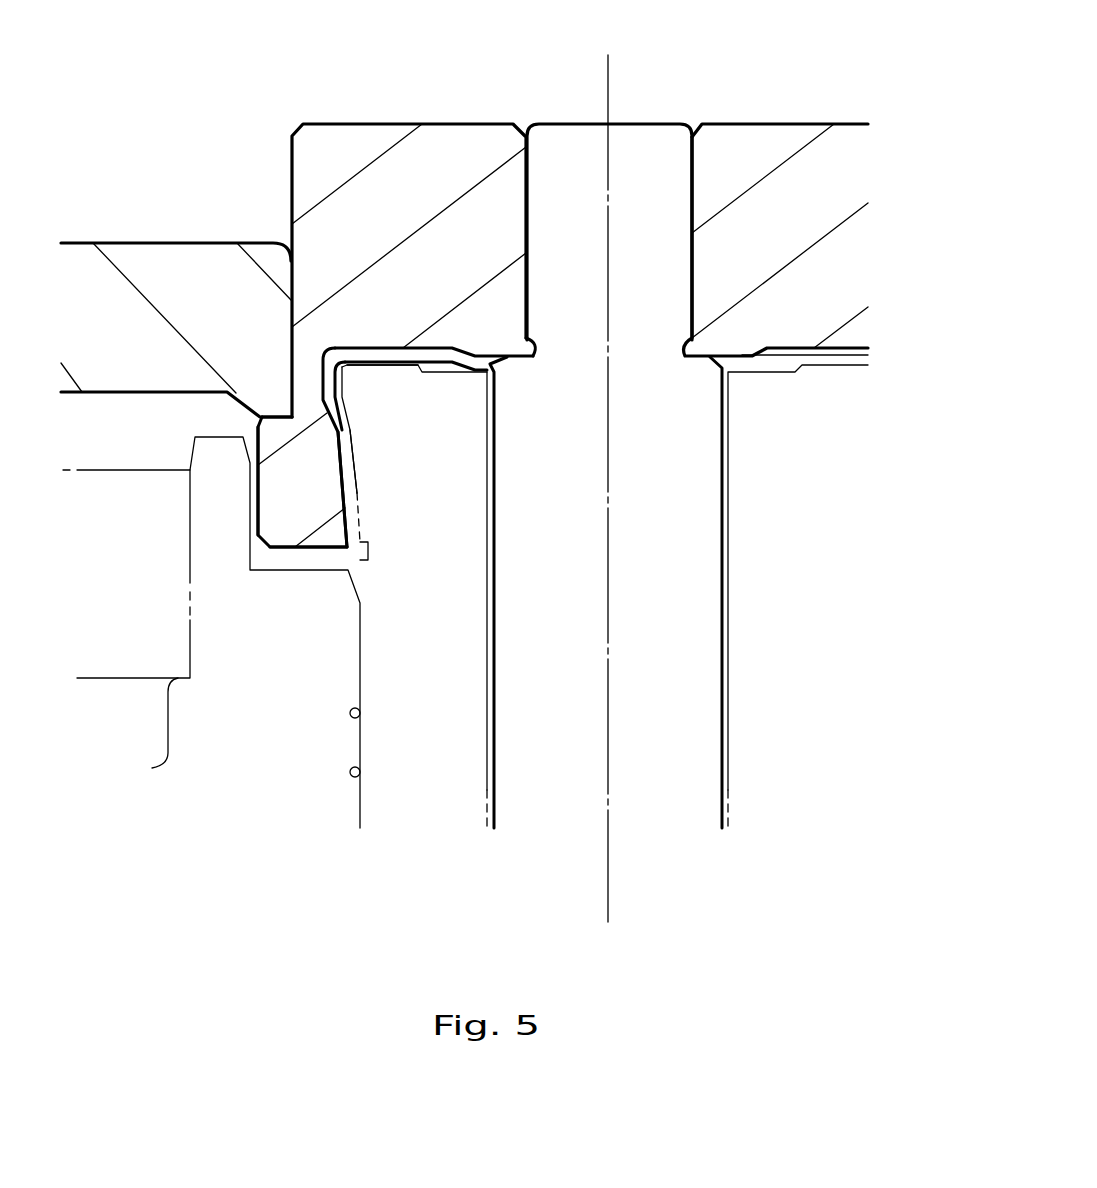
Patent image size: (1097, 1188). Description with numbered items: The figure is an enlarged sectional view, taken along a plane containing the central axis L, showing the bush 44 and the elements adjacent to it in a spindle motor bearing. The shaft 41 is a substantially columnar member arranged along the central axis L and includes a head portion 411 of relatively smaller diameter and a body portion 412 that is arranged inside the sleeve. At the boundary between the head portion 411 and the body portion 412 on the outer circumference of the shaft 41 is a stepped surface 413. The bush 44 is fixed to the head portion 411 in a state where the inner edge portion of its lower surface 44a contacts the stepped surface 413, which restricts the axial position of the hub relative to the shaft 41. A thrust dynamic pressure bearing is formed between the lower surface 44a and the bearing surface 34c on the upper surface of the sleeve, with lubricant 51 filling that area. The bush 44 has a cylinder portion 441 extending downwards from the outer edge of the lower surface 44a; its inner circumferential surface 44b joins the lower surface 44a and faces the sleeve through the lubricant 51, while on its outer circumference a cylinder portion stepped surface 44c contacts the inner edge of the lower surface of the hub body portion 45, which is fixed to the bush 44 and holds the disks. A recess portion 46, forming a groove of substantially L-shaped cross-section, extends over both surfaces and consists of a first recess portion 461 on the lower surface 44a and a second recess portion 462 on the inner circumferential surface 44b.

The shaft 41 is at (650, 124).
The head portion 411 is at (702, 240).
The body portion 412 is at (697, 467).
The stepped surface 413 is at (515, 340).
The bush 44 is at (322, 124).
The lower surface 44a is at (452, 366).
The inner circumferential surface 44b is at (351, 497).
The cylinder portion stepped surface 44c is at (276, 404).
The cylinder portion 441 is at (280, 520).
The hub body portion 45 is at (140, 243).
The recess portion 46 is at (392, 271).
The first recess portion 461 is at (378, 341).
The second recess portion 462 is at (315, 372).
The bearing surface 34c is at (407, 344).
The lubricant 51 is at (490, 364).
The central axis L is at (607, 95).